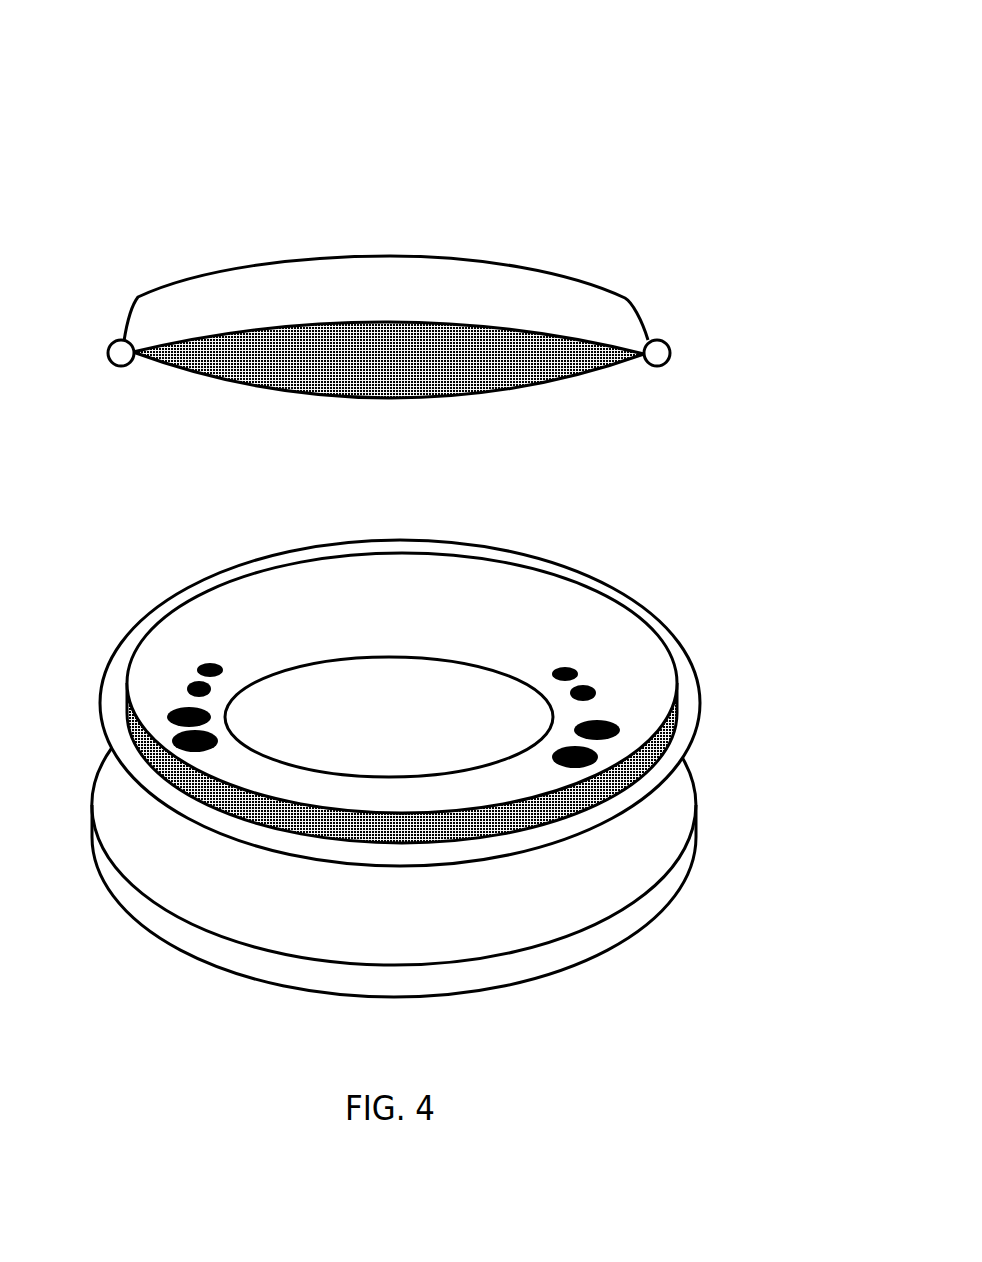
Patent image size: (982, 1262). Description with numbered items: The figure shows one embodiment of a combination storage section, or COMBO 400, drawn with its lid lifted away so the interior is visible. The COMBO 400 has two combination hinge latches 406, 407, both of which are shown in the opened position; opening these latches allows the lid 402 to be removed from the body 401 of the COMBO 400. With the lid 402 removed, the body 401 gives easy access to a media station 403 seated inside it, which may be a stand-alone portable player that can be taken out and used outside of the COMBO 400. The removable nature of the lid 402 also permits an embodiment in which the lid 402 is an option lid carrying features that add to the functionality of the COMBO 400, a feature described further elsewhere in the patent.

The COMBO 400 is at (328, 108).
The body 401 is at (670, 823).
The lid 402 is at (415, 282).
The media station 403 is at (470, 593).
The combination hinge latch 406 is at (113, 340).
The combination hinge latch 407 is at (668, 345).